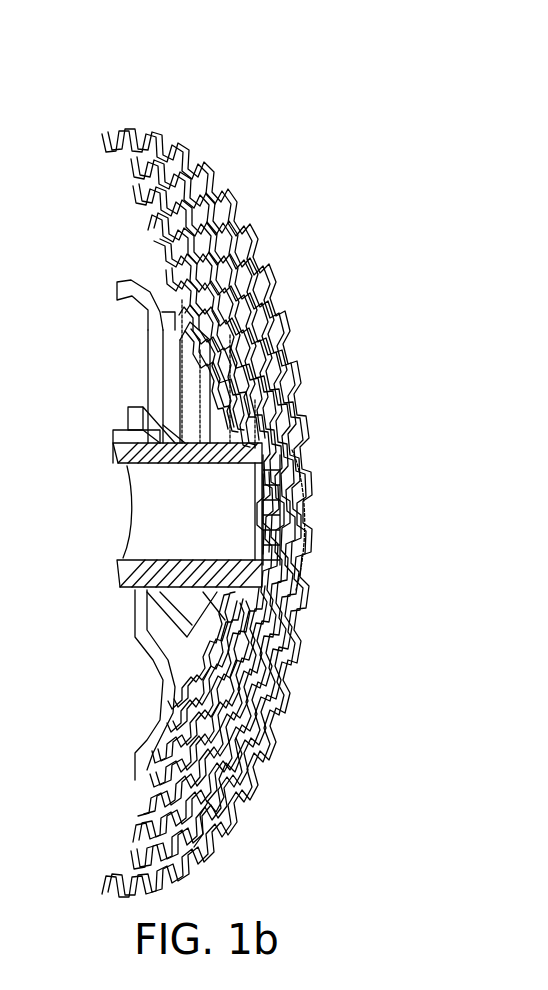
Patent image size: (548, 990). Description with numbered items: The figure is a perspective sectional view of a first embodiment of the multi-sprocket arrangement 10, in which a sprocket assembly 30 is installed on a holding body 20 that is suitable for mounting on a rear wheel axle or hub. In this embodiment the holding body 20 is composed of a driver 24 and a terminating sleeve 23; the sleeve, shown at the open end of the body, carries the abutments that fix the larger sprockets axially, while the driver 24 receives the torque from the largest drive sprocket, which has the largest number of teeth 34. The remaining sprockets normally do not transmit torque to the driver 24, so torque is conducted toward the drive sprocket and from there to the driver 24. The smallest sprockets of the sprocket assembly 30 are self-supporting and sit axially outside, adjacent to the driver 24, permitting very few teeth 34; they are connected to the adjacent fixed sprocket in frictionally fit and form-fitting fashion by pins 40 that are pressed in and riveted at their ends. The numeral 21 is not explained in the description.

The multi-sprocket arrangement 10 is at (300, 53).
The holding body 20 is at (103, 480).
The lock ring / spline portion of carrier 21 is at (282, 490).
The terminating sleeve 23 is at (165, 592).
The driver 24 is at (118, 573).
The sprocket assembly 30 is at (296, 241).
The teeth 34 is at (268, 722).
The pins 40 is at (300, 552).